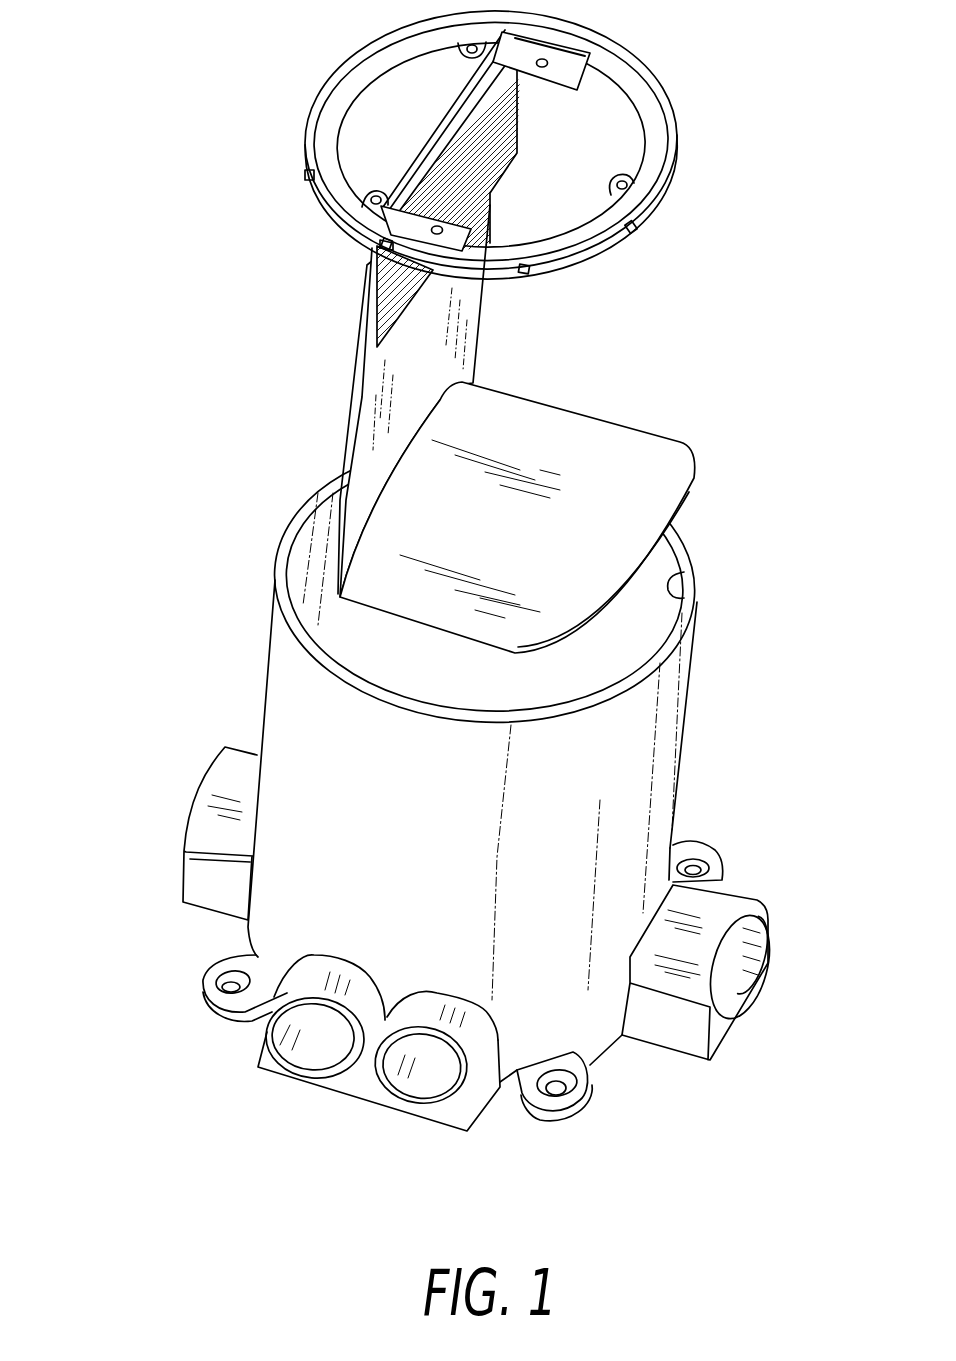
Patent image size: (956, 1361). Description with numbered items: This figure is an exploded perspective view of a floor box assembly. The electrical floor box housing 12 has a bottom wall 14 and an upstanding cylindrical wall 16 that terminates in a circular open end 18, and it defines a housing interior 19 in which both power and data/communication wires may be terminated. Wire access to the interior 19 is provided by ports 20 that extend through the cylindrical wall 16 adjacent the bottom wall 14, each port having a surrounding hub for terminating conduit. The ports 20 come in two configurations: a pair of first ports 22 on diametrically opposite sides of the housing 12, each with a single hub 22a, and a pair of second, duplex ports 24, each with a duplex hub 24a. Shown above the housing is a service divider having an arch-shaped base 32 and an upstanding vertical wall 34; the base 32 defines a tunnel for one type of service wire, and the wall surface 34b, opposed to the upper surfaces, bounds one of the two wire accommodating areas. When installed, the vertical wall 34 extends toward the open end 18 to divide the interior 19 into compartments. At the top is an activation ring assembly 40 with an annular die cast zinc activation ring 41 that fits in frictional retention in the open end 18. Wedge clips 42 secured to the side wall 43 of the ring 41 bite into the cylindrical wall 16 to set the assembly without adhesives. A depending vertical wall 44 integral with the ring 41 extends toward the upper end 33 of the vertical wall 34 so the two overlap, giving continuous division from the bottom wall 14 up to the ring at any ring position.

The electrical floor box housing 12 is at (673, 693).
The bottom wall 14 is at (603, 1062).
The upstanding cylindrical wall 16 is at (655, 795).
The circular open end 18 is at (678, 582).
The housing interior 19 is at (320, 610).
The ports 20 is at (205, 833).
The first ports 22 is at (712, 964).
The single hub 22a is at (722, 915).
The second ports 24 is at (341, 1070).
The duplex hub 24a is at (360, 1080).
The arch-shaped base 32 is at (590, 440).
The upper end of vertical wall 33 is at (372, 251).
The upstanding vertical wall 34 is at (387, 401).
The wall surface 34b is at (360, 340).
The activation ring assembly 40 is at (474, 145).
The activation ring 41 is at (622, 75).
The wedge clips 42 is at (635, 225).
The side wall of ring 43 is at (667, 185).
The depending vertical wall 44 is at (437, 130).